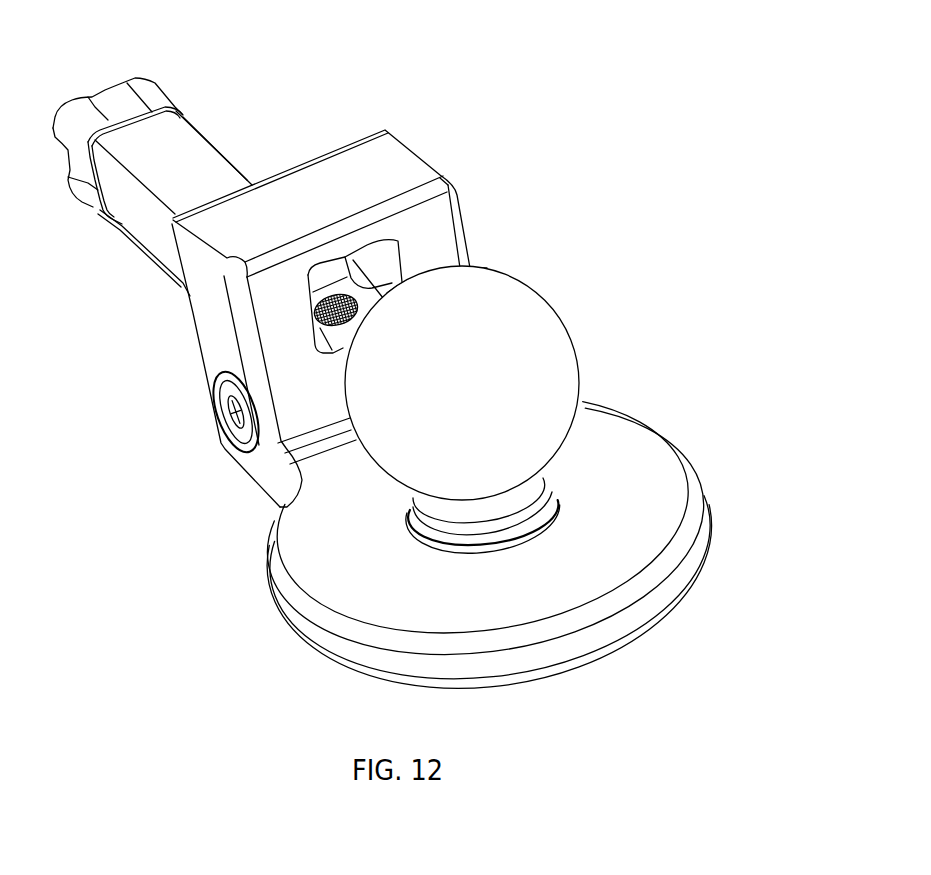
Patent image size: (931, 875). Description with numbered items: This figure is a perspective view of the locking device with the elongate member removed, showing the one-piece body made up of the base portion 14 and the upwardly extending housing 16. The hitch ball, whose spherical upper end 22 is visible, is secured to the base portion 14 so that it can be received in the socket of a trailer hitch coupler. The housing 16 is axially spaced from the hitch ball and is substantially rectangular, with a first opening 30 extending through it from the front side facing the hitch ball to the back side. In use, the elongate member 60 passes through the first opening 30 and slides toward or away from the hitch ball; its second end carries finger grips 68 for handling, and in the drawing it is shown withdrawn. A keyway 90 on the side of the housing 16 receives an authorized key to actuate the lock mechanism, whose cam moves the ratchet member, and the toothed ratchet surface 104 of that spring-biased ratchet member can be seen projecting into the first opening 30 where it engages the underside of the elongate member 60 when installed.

The base portion 14 is at (687, 520).
The housing 16 is at (210, 323).
The spherical upper end 22 is at (550, 359).
The first opening 30 is at (380, 257).
The elongate member 60 is at (208, 163).
The finger grips 68 is at (125, 110).
The keyway 90 is at (243, 410).
The ratchet surface 104 is at (355, 306).